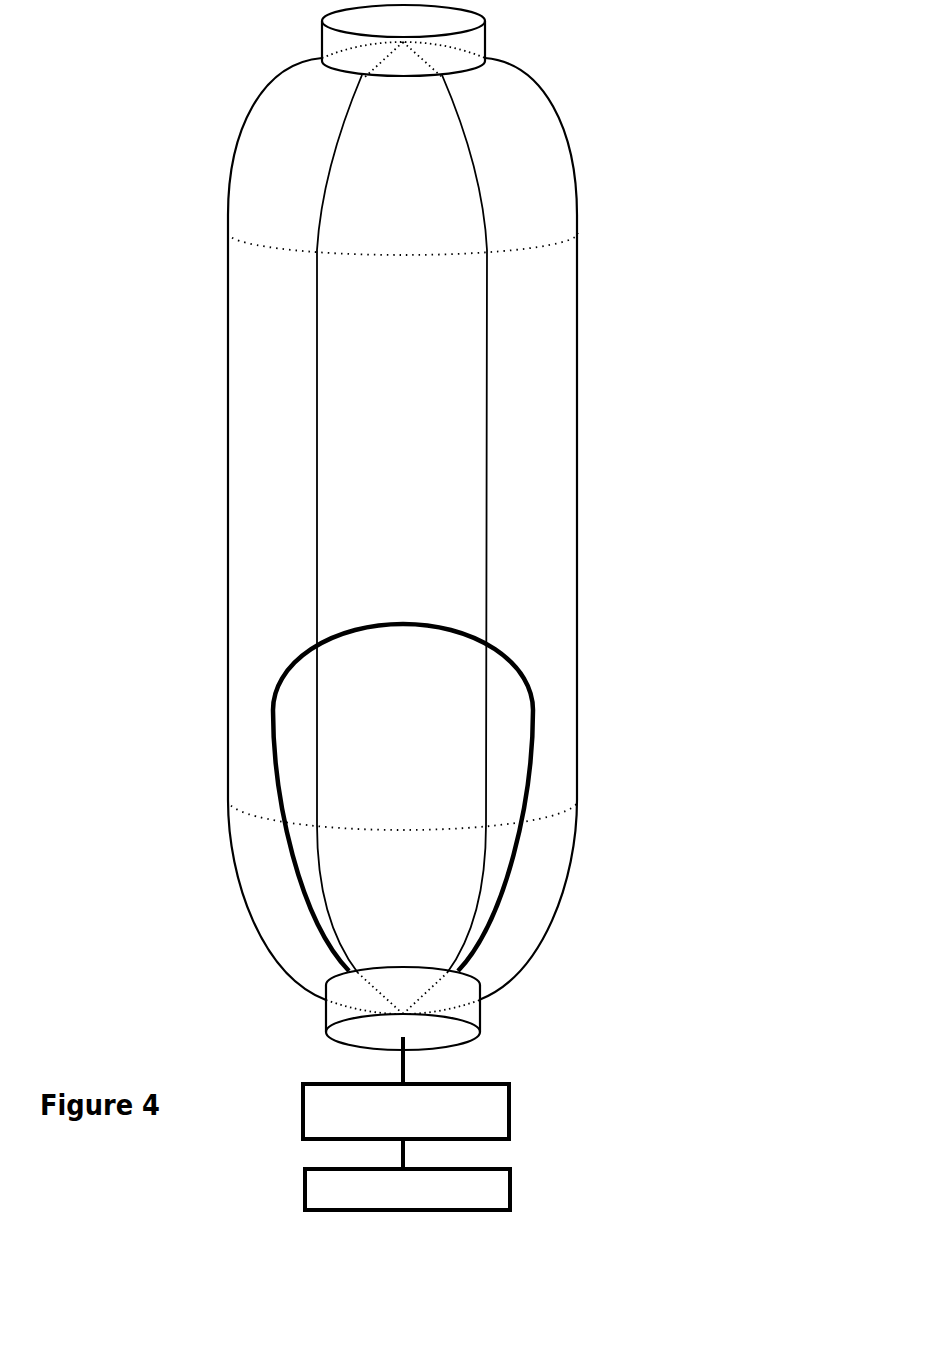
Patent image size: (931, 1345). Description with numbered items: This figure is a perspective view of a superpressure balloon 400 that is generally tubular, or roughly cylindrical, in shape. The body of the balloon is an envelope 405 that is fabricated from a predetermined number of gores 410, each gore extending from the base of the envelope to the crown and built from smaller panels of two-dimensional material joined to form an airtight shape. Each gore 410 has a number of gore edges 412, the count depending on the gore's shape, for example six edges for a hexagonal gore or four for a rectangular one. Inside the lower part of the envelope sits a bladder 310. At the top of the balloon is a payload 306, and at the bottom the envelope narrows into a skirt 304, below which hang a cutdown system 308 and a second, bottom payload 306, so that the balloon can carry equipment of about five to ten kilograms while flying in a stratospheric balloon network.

The superpressure balloon 400 is at (677, 138).
The envelope 405 is at (226, 250).
The gore 410 is at (482, 524).
The gore edge 412 is at (489, 414).
The bladder 310 is at (403, 797).
The payload 306 is at (407, 607).
The skirt 304 is at (482, 1028).
The cutdown system 308 is at (406, 1103).